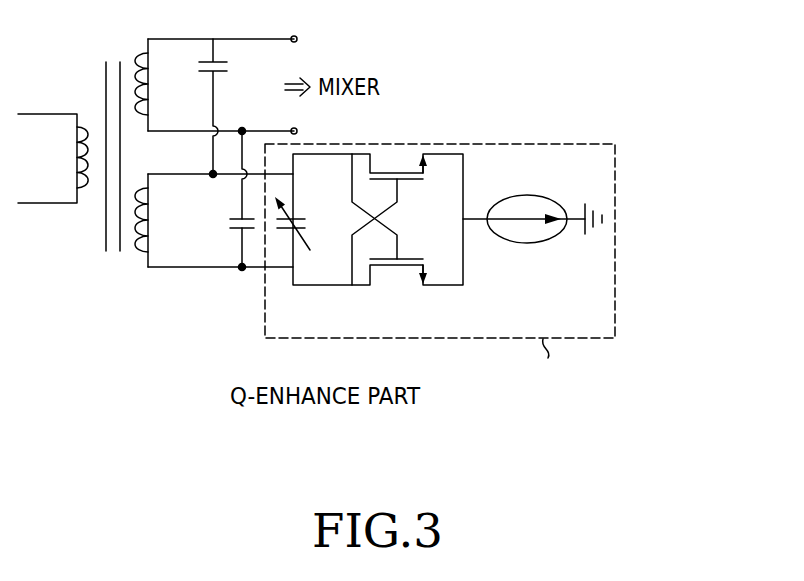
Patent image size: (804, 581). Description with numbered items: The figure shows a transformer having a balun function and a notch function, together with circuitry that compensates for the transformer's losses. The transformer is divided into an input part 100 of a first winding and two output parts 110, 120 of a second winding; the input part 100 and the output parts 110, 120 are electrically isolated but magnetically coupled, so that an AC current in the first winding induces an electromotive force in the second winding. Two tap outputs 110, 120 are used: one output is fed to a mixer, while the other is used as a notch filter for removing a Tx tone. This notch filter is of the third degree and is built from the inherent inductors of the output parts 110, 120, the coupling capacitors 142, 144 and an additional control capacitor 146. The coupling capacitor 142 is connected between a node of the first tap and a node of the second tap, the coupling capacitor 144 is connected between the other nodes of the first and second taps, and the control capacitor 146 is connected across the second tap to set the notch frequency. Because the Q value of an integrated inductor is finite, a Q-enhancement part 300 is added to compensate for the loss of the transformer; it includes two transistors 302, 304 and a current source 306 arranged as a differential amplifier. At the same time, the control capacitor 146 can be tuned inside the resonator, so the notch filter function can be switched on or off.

The input part 100 is at (81, 190).
The output part 110 is at (137, 55).
The output part 120 is at (141, 255).
The coupling capacitor 142 is at (227, 72).
The coupling capacitor 144 is at (230, 228).
The control capacitor 146 is at (305, 228).
The Q-enhancement part 300 is at (696, 373).
The transistor 302 is at (417, 180).
The transistor 304 is at (423, 286).
The current source 306 is at (525, 244).